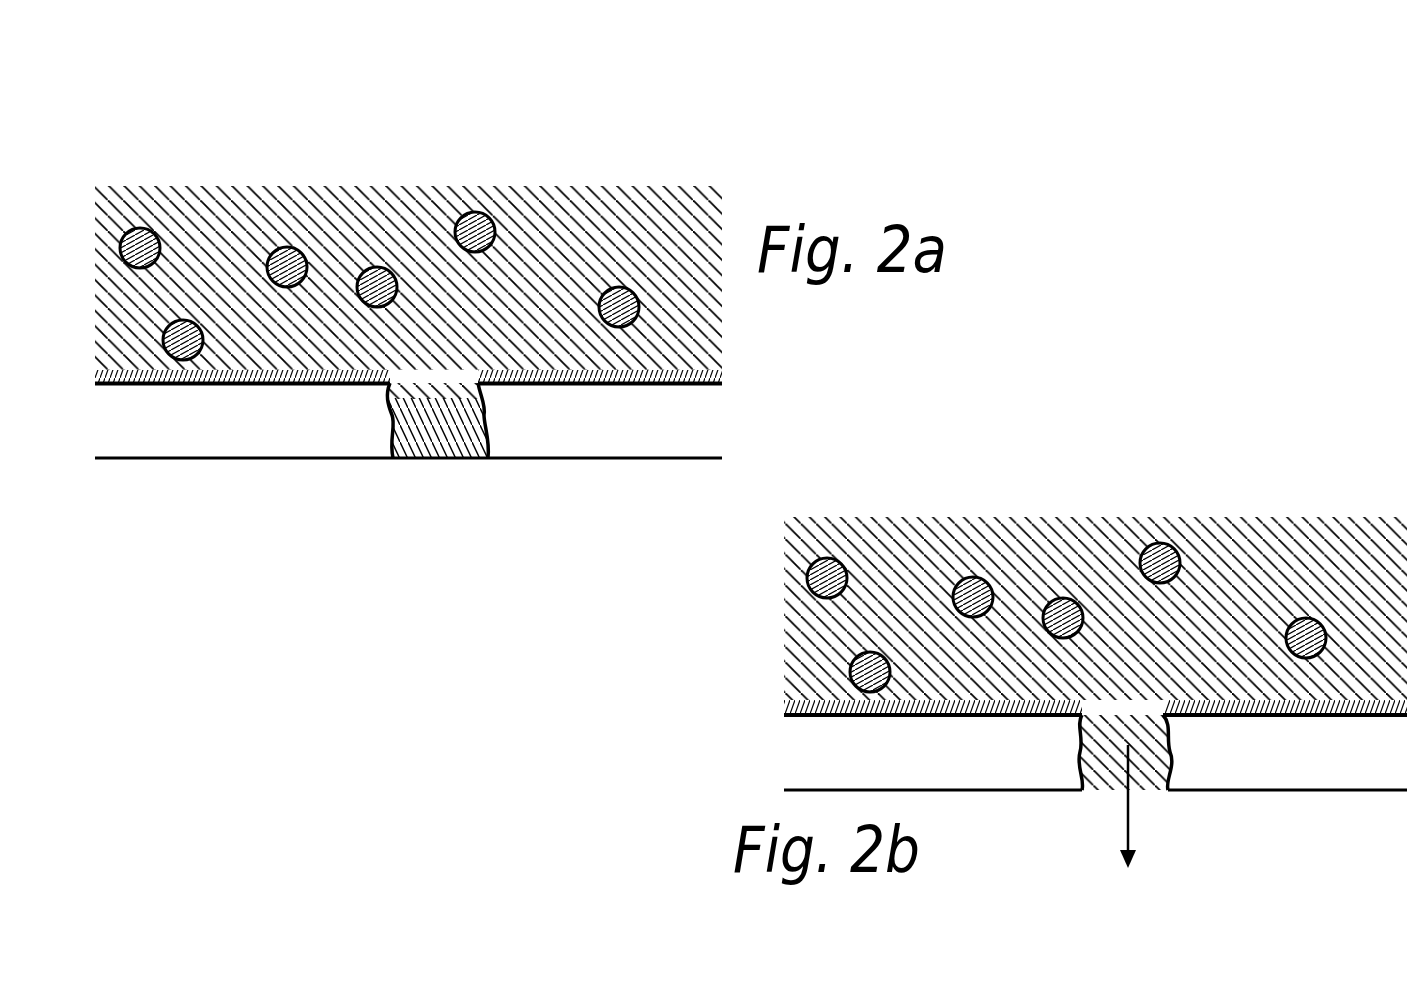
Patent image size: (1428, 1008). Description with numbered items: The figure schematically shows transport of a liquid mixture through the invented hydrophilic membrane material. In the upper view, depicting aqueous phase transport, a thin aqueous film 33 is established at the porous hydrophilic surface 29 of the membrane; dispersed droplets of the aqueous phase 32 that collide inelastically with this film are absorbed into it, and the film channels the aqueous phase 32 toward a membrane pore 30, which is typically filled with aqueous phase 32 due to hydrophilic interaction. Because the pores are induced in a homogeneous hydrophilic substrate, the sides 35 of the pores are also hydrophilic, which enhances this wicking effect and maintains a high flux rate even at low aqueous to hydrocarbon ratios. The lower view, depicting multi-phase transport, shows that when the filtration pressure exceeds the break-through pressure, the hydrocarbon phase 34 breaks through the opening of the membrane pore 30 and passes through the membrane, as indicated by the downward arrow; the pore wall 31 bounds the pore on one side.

In FIG. 2a, the porous hydrophilic surface 29 is at (127, 383).
In FIG. 2a, the membrane pore 30 is at (418, 393).
In FIG. 2a, the through-hole wall 31 is at (392, 428).
In FIG. 2a, the aqueous phase 32 is at (378, 267).
In FIG. 2b, the aqueous phase 32 is at (1065, 598).
In FIG. 2a, the thin aqueous film 33 is at (658, 385).
In FIG. 2b, the thin aqueous film 33 is at (785, 710).
In FIG. 2a, the hydrocarbon phase 34 is at (680, 212).
In FIG. 2b, the hydrocarbon phase 34 is at (1360, 547).
In FIG. 2a, the sides of the pores 35 is at (475, 425).